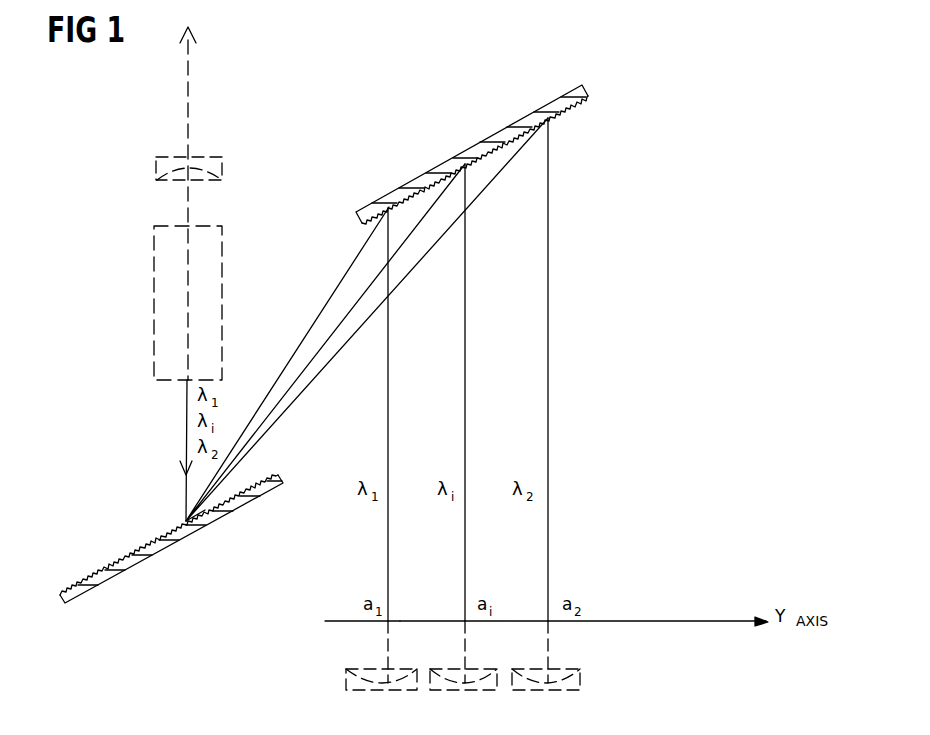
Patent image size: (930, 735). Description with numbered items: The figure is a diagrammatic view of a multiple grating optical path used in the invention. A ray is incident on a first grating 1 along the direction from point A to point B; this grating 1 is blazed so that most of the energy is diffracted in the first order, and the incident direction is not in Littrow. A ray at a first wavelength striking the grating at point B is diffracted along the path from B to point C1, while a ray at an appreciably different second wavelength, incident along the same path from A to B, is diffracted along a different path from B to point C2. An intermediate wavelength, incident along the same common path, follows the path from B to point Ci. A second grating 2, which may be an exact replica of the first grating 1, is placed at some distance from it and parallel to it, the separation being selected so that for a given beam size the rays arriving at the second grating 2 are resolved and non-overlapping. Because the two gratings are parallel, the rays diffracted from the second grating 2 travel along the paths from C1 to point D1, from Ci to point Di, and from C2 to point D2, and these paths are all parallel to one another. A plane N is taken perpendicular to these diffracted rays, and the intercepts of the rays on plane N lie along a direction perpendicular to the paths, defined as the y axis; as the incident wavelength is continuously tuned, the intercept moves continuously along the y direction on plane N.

The grating 1 is at (130, 563).
The second grating 2 is at (577, 103).
The point A is at (188, 315).
The point B is at (181, 521).
The point C1 is at (402, 414).
The point Ci is at (476, 392).
The point C2 is at (567, 369).
The point D1 is at (381, 655).
The point Di is at (463, 655).
The point D2 is at (546, 655).
The plane N is at (352, 624).